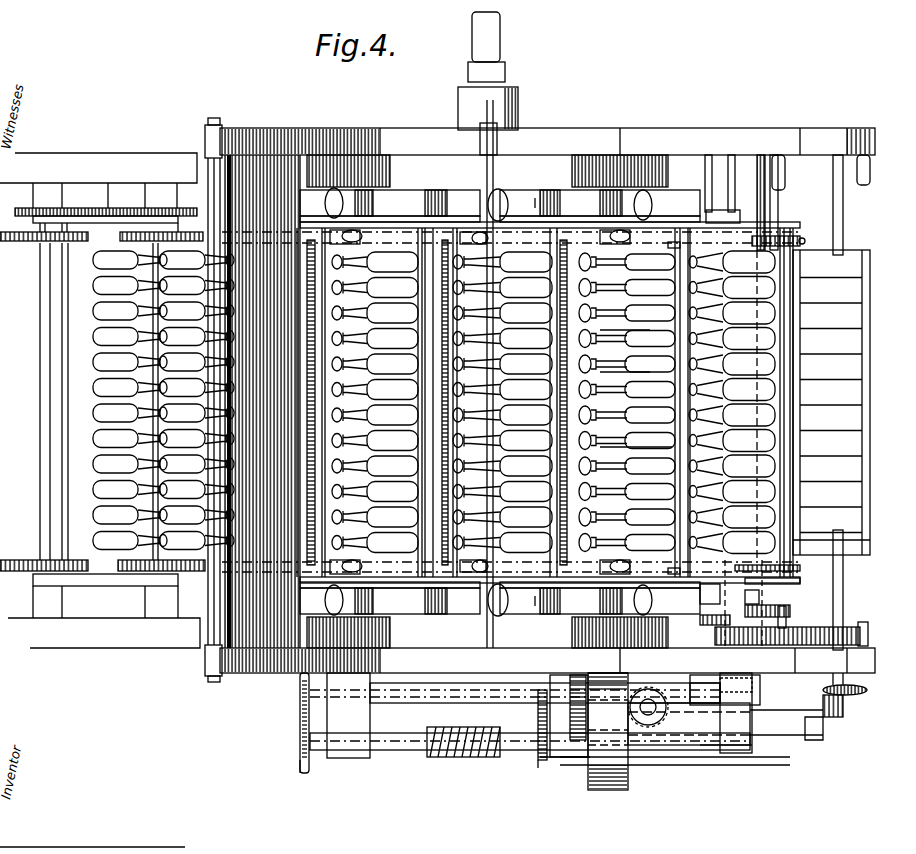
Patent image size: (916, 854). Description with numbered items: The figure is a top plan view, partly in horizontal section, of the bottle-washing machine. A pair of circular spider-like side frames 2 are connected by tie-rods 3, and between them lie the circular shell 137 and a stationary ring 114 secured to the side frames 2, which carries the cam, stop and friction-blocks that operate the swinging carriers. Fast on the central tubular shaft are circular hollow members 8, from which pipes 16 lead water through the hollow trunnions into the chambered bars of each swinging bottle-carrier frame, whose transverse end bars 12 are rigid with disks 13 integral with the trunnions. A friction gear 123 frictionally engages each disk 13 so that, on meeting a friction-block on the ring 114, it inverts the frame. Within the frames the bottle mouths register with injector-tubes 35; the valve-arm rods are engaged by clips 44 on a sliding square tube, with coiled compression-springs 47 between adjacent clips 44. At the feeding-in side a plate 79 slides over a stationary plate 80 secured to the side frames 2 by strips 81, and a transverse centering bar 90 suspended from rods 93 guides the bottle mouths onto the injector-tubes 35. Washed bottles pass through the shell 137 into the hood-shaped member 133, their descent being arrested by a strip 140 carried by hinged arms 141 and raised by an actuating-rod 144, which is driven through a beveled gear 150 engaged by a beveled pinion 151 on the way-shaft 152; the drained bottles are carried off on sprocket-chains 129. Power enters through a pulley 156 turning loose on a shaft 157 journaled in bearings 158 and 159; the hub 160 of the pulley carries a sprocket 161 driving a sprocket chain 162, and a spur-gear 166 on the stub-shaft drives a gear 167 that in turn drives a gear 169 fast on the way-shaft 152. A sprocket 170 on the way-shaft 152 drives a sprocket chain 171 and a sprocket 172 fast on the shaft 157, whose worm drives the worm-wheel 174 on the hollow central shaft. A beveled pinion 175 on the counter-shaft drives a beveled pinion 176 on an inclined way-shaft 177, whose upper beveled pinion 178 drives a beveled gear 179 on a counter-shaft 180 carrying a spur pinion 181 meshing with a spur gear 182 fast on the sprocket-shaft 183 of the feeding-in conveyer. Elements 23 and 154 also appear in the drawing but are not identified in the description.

The side frames 2 is at (572, 132).
The tie-rods 3 is at (493, 168).
The circular hollow members 8 is at (521, 403).
The transverse end bars 12 is at (398, 222).
The disks 13 is at (330, 219).
The pipes 16 is at (356, 233).
The bottle holder 23 is at (330, 415).
The injector-tubes 35 is at (600, 345).
The clip 44 is at (455, 338).
The coiled compression-springs 47 is at (455, 312).
The plate 79 is at (740, 207).
The stationary plate 80 is at (746, 215).
The strips 81 is at (722, 202).
The transverse bar 90 is at (672, 447).
The rods 93 is at (678, 246).
The stationary ring 114 is at (660, 172).
The friction gear 123 is at (326, 203).
The sprocket-chains 129 is at (204, 240).
The hood-shaped member 133 is at (868, 486).
The circular shell 137 is at (238, 590).
The strip 140 is at (795, 542).
The arms 141 is at (800, 249).
The actuating-rod 144 is at (805, 580).
The beveled gear 150 is at (708, 683).
The beveled pinion 151 is at (760, 688).
The way-shaft 152 is at (420, 695).
The clutch 154 is at (752, 645).
The pulley 156 is at (622, 770).
The shaft 157 is at (712, 752).
The bearing 158 is at (742, 748).
The bearing 159 is at (350, 757).
The hub 160 is at (560, 757).
The sprocket 161 is at (542, 760).
The sprocket chain 162 is at (535, 716).
The spur-gear 166 is at (588, 718).
The gear 167 is at (572, 690).
The gear 169 is at (600, 675).
The sprocket 170 is at (302, 676).
The sprocket chain 171 is at (300, 708).
The sprocket 172 is at (306, 773).
The worm-wheel 174 is at (448, 757).
The beveled pinion 175 is at (662, 714).
The beveled pinion 176 is at (680, 740).
The inclined way-shaft 177 is at (766, 712).
The beveled pinion 178 is at (846, 708).
The beveled gear 179 is at (866, 693).
The counter-shaft 180 is at (848, 620).
The spur pinion 181 is at (868, 633).
The spur gear 182 is at (790, 620).
The sprocket-shaft 183 is at (784, 608).